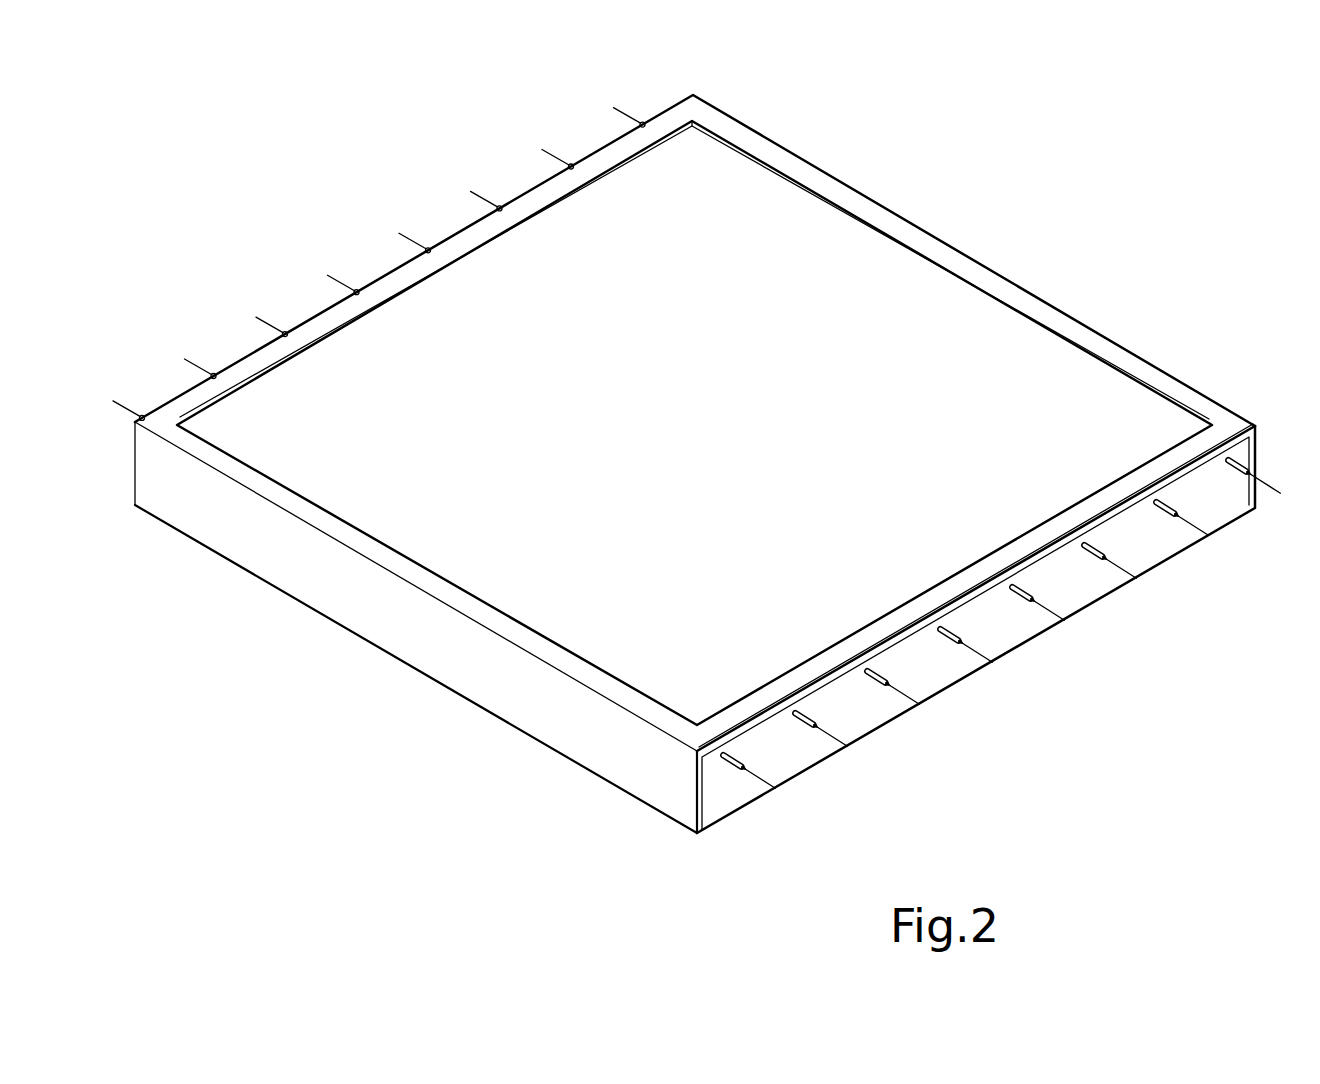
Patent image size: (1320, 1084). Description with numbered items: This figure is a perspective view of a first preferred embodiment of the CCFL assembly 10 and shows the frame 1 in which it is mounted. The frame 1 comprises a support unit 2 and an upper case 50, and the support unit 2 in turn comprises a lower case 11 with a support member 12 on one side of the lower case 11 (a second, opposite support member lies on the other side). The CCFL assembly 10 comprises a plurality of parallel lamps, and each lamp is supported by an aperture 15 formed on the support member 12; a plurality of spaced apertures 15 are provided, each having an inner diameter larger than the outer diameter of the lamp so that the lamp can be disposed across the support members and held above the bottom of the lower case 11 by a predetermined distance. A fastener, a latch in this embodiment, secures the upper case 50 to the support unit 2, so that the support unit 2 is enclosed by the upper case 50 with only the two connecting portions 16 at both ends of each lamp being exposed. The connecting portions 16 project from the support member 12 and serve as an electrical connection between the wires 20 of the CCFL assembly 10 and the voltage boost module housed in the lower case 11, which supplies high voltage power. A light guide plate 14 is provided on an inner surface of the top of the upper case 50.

The frame 1 is at (1192, 193).
The support unit 2 is at (860, 711).
The CCFL assembly 10 is at (755, 768).
The lower case 11 is at (1037, 638).
The support member 12 is at (937, 668).
The light guide plate 14 is at (1007, 352).
The aperture 15 is at (1228, 462).
The connecting portion 16 is at (735, 767).
The wires 20 is at (765, 783).
The upper case 50 is at (992, 268).